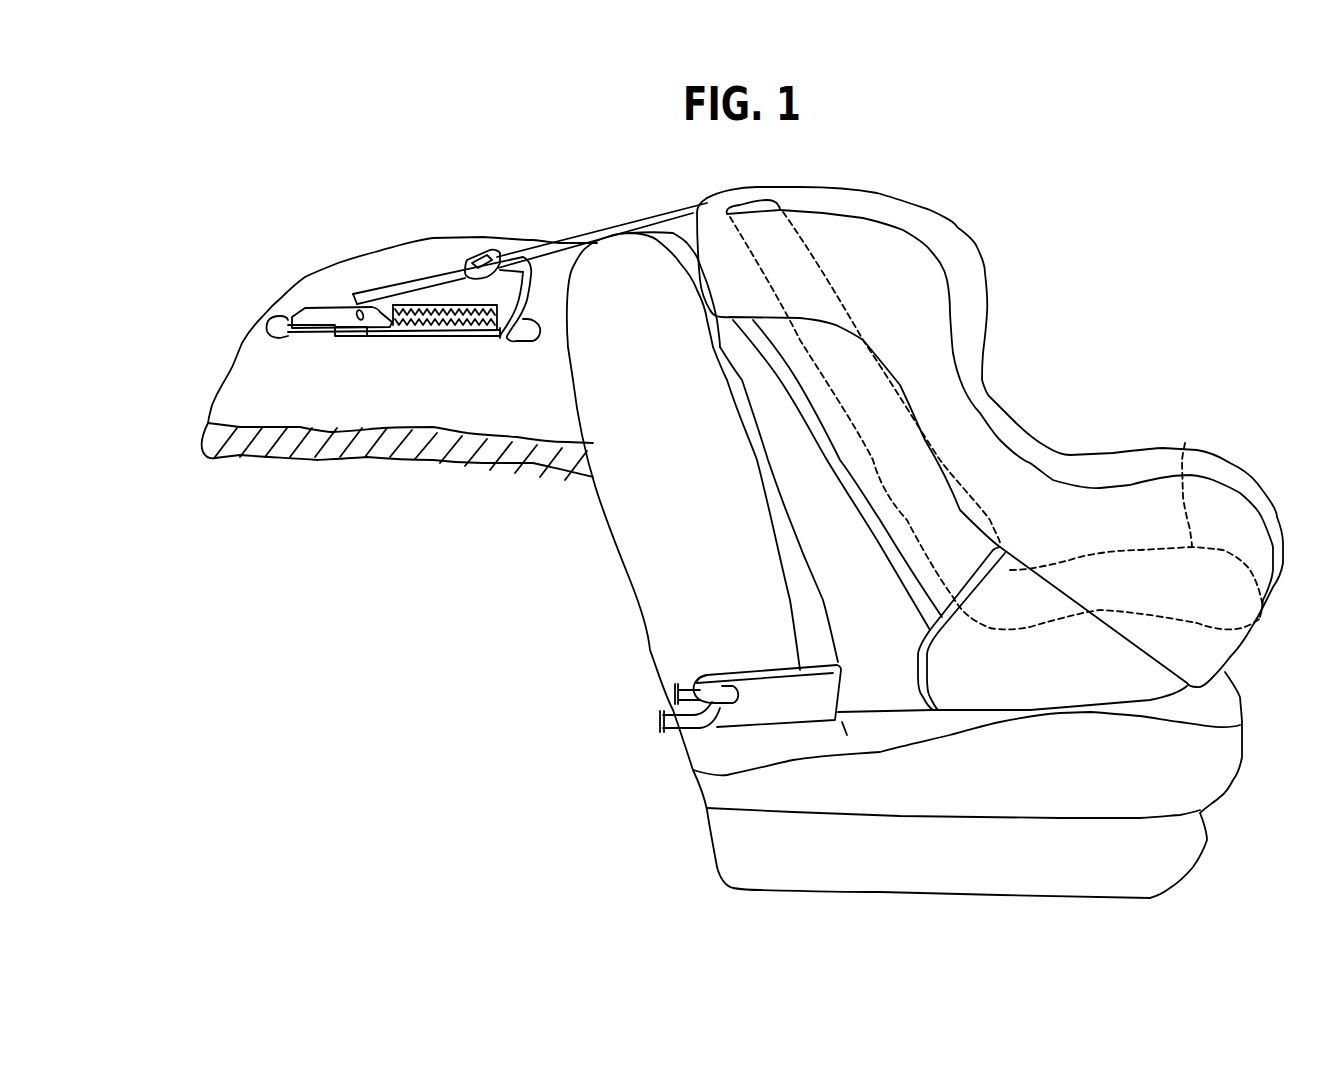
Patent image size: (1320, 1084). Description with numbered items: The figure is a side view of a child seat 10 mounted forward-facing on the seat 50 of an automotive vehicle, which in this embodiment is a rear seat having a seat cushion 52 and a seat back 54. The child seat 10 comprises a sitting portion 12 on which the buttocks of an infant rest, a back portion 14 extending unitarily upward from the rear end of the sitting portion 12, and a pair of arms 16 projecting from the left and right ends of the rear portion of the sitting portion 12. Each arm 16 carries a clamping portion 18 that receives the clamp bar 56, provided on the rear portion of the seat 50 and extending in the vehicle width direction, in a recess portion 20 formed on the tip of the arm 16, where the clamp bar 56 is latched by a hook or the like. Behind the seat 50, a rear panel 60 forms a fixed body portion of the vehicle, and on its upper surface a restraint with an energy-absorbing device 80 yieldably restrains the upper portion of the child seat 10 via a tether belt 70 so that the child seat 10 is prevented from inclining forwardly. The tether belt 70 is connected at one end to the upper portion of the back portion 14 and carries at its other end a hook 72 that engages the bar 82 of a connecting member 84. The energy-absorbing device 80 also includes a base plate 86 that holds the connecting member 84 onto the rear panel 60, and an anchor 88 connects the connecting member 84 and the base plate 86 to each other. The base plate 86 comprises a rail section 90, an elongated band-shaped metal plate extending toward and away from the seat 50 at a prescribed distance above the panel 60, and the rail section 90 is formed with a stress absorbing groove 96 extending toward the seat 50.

The child seat 10 is at (959, 189).
The sitting portion 12 is at (1185, 443).
The back portion 14 is at (823, 303).
The arm 16 is at (763, 707).
The clamping portion 18 is at (715, 714).
The recess portion 20 is at (733, 690).
The seat 50 is at (1237, 768).
The seat cushion 52 is at (1143, 770).
The seat back 54 is at (643, 547).
The clamp bar 56 is at (673, 733).
The rear panel 60 is at (298, 293).
The tether belt 70 is at (595, 233).
The hook 72 is at (410, 281).
The energy-absorbing device 80 is at (328, 285).
The bar 82 is at (387, 326).
The connecting member 84 is at (348, 303).
The base plate 86 is at (279, 342).
The anchor 88 is at (338, 333).
The rail section 90 is at (425, 332).
The stress absorbing groove 96 is at (472, 322).